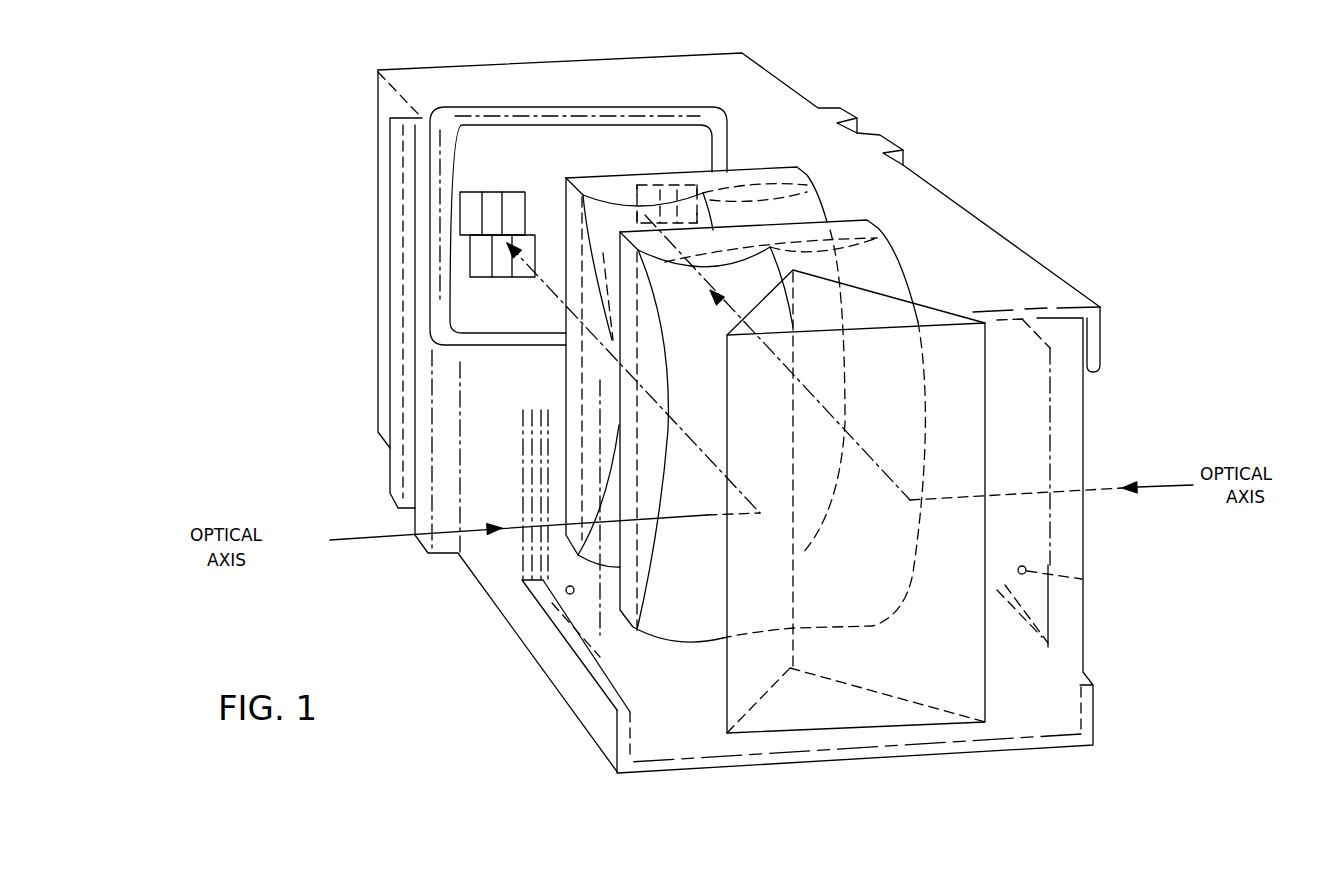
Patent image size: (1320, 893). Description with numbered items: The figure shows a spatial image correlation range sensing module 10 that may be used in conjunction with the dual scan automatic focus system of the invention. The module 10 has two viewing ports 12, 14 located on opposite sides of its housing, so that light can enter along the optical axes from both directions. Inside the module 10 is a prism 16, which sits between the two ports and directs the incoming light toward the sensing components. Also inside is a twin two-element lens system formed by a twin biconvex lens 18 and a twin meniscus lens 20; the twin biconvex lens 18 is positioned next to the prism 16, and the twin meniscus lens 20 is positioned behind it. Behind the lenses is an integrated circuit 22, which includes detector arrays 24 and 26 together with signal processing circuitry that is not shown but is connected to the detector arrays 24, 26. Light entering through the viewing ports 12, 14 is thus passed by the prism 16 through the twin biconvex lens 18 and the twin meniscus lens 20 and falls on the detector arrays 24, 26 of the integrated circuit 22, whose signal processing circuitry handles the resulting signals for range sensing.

The module 10 is at (316, 290).
The viewing port 12 is at (1083, 578).
The viewing port 14 is at (566, 594).
The prism 16 is at (941, 306).
The twin biconvex lens 18 is at (877, 223).
The twin meniscus lens 20 is at (803, 172).
The integrated circuit 22 is at (535, 100).
The detector array 24 is at (660, 187).
The detector array 26 is at (482, 192).